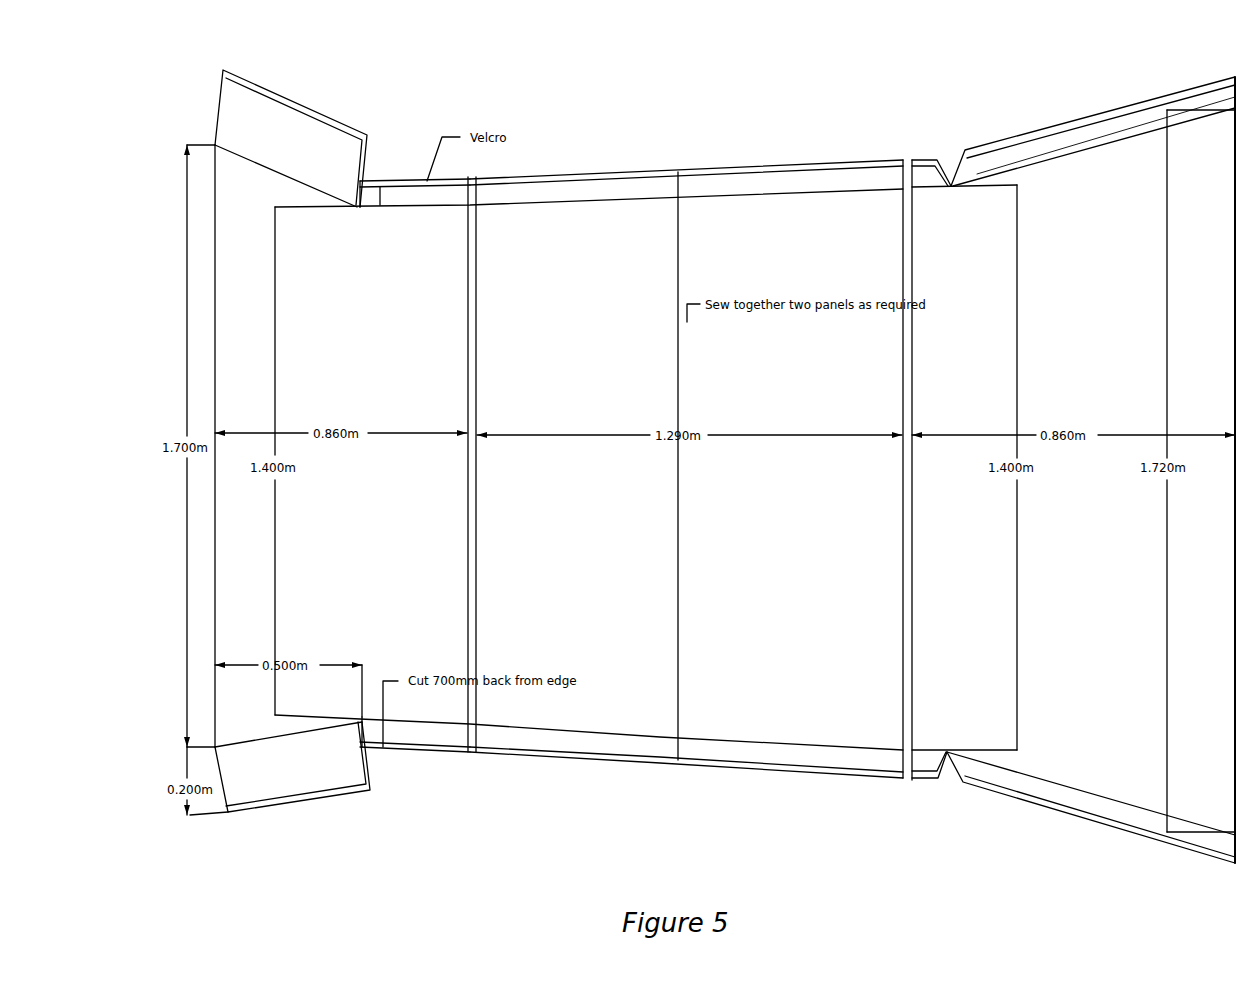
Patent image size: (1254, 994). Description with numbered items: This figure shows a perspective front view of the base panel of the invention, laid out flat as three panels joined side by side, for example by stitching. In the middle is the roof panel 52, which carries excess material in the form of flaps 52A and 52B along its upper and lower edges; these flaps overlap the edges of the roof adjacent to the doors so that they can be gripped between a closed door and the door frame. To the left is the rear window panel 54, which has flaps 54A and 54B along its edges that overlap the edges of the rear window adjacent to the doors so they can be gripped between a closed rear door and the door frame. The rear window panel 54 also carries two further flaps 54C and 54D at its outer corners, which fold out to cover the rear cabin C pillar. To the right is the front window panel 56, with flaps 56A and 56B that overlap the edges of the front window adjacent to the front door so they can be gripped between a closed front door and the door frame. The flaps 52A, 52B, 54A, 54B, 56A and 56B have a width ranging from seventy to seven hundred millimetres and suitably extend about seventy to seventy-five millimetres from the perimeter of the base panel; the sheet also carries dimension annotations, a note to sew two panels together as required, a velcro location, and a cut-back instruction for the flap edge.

The roof panel 52 is at (694, 470).
The flap 52A is at (738, 185).
The flap 52B is at (703, 748).
The rear window panel 54 is at (559, 448).
The flap 54A is at (418, 195).
The flap 54B is at (412, 735).
The flap 54C is at (290, 118).
The flap 54D is at (270, 783).
The front window panel 56 is at (1073, 470).
The flap 56A is at (1090, 128).
The flap 56B is at (1063, 795).